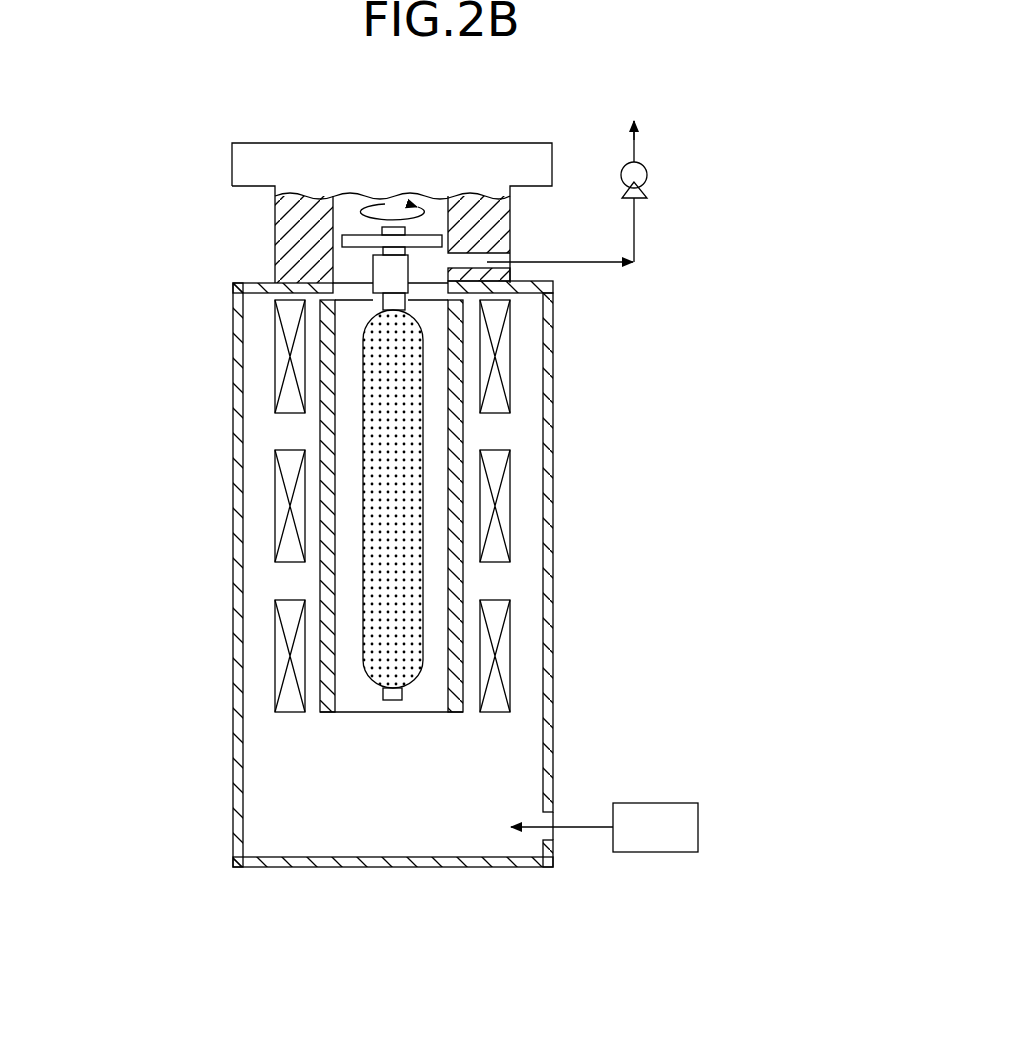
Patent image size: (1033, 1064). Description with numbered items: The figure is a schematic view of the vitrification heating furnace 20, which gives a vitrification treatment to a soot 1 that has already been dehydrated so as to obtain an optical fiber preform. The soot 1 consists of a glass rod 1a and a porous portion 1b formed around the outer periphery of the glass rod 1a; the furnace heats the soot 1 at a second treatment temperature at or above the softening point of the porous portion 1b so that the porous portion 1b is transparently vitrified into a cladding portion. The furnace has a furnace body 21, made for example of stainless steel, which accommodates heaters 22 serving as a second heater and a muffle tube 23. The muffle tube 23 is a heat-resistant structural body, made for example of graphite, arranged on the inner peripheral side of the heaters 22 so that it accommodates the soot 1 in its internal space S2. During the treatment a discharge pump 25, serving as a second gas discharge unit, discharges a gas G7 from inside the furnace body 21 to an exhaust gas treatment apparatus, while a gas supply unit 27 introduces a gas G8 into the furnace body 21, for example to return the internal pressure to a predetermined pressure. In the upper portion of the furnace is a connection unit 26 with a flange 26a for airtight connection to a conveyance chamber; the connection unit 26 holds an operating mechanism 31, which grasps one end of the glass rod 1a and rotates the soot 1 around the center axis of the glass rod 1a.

The vitrification heating furnace 20 is at (733, 128).
The connection unit 26 is at (265, 141).
The flange 26a is at (232, 165).
The operating mechanism 31 is at (373, 265).
The soot 1 is at (160, 257).
The glass rod 1a is at (378, 294).
The porous portion 1b is at (363, 348).
The furnace body 21 is at (233, 392).
The heaters 22 is at (275, 505).
The muffle tube 23 is at (320, 575).
The discharge pump 25 is at (650, 175).
The gas supply unit 27 is at (653, 803).
The internal space S2 is at (351, 705).
The gas G7 is at (560, 210).
The gas G8 is at (562, 846).